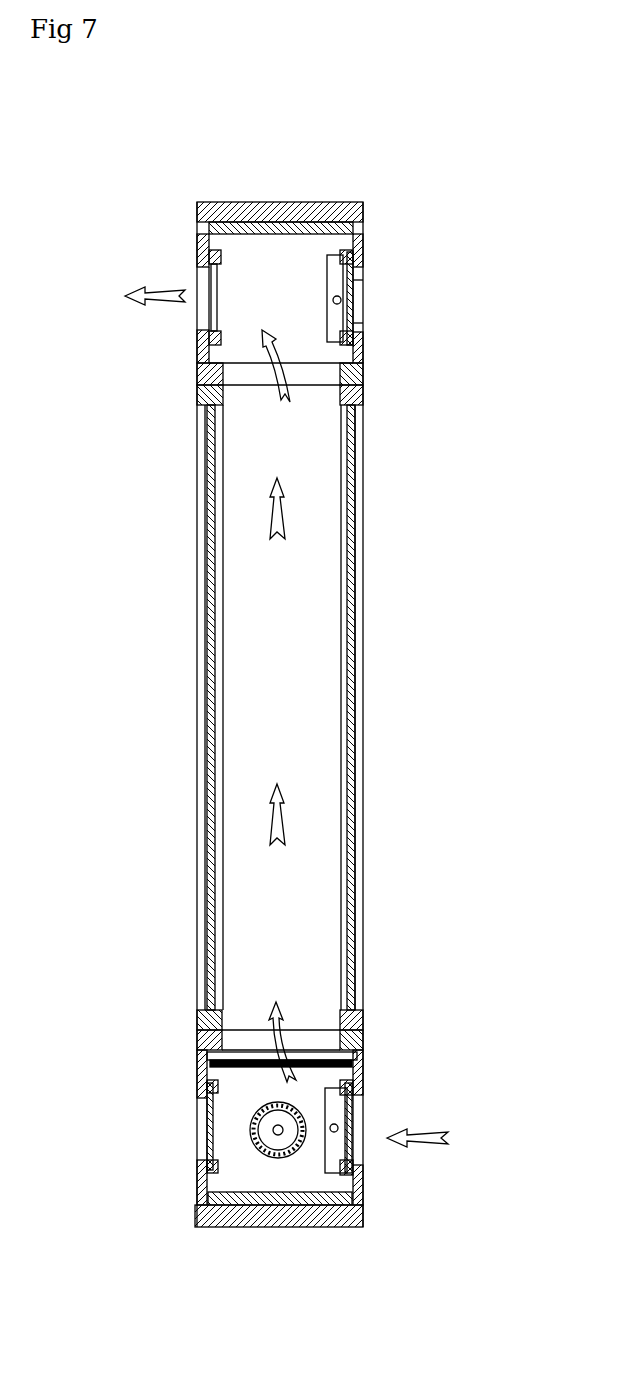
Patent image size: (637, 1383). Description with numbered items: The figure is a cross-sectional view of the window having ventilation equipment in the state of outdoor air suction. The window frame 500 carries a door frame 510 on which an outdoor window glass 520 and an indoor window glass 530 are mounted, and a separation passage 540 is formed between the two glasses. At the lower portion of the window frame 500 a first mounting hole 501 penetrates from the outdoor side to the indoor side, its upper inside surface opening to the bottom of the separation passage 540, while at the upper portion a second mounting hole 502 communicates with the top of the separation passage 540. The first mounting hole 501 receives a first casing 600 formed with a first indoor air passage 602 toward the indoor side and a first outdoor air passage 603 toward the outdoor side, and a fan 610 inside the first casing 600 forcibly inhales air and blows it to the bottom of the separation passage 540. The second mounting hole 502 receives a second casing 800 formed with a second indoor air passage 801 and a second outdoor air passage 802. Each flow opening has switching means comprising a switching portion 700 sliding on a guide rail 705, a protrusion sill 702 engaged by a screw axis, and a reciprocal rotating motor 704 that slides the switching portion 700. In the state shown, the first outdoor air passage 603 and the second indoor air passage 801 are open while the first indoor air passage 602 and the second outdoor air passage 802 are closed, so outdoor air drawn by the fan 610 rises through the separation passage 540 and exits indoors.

The window frame 500 is at (364, 208).
The first mounting hole 501 is at (315, 1205).
The second mounting hole 502 is at (240, 220).
The door frame 510 is at (200, 388).
The outdoor window glass 520 is at (362, 512).
The indoor window glass 530 is at (208, 708).
The separation passage 540 is at (322, 706).
The first casing 600 is at (363, 1078).
The first indoor air passage 602 is at (200, 1128).
The first outdoor air passage 603 is at (356, 1110).
The fan 610 is at (262, 1150).
The switching portion 700 is at (360, 323).
The protrusion sill 702 is at (345, 1178).
The reciprocal rotating motor 704 is at (333, 300).
The guide rail 705 is at (200, 1068).
The second casing 800 is at (355, 250).
The second indoor air passage 801 is at (200, 275).
The second outdoor air passage 802 is at (358, 287).